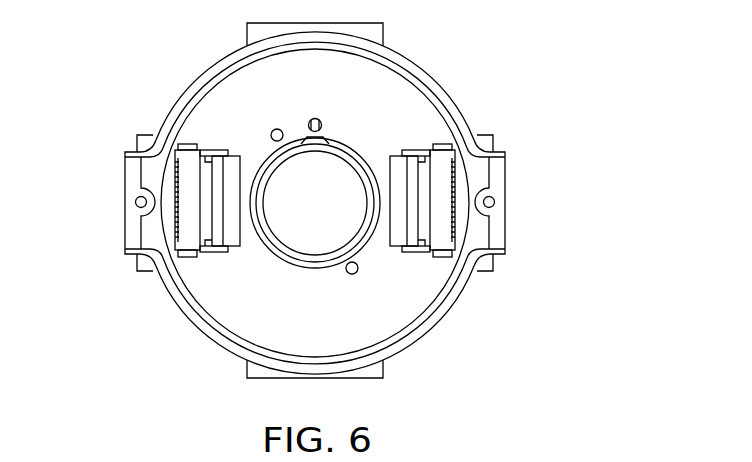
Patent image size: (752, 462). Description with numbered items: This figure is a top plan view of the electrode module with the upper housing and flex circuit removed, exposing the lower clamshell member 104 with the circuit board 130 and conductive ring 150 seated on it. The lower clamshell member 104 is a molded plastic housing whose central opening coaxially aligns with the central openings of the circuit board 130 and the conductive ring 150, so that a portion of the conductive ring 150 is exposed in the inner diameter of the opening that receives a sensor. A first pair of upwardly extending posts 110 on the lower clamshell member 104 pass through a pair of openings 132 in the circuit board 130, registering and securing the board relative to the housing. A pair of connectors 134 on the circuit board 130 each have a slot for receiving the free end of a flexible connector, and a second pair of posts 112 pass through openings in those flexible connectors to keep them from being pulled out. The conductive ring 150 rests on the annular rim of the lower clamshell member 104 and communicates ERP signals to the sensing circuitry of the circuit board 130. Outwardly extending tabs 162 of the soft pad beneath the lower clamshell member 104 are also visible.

The lower clamshell member 104 is at (466, 118).
The first pair of upwardly extending posts 110 is at (273, 129).
The second pair of upwardly extending posts 112 is at (135, 202).
The circuit board 130 is at (402, 102).
The openings 132 is at (290, 126).
The connectors 134 is at (208, 265).
The conductive ring 150 is at (263, 187).
The tabs 162 is at (381, 376).